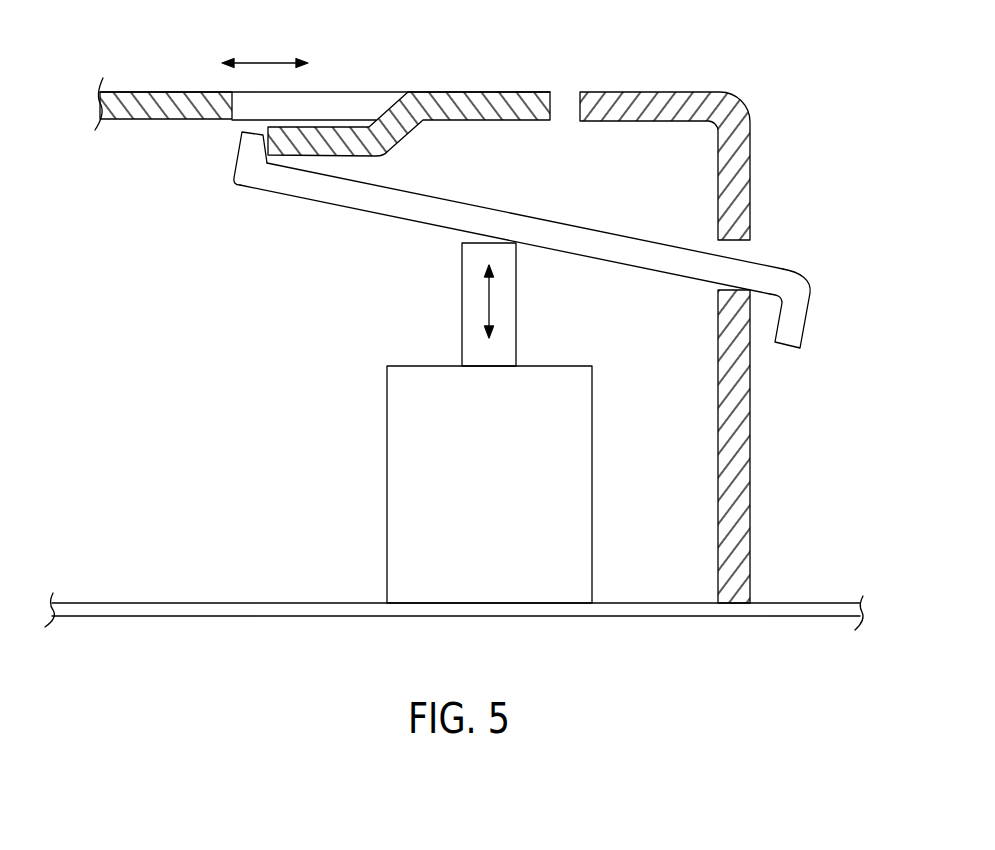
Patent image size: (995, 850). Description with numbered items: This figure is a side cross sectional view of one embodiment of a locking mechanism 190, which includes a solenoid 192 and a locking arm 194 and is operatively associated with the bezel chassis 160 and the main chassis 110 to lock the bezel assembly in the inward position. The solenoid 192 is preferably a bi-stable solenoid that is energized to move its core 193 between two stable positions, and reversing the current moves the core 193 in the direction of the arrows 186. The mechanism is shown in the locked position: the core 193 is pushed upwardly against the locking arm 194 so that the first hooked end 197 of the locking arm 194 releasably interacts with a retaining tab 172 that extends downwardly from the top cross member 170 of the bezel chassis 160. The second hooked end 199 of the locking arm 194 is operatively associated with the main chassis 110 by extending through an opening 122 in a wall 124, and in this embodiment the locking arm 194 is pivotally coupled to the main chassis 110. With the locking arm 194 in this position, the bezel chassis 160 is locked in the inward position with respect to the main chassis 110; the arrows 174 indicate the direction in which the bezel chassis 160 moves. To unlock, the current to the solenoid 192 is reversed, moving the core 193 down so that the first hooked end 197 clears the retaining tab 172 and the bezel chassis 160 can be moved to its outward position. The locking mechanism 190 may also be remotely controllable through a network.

The main chassis 110 is at (801, 600).
The opening 122 is at (740, 247).
The wall 124 is at (740, 185).
The bezel chassis 160 is at (476, 92).
The top cross member 170 is at (168, 100).
The retaining tab 172 is at (337, 147).
The arrows 174 is at (262, 60).
The arrows 186 is at (490, 302).
The locking mechanism 190 is at (306, 372).
The solenoid 192 is at (405, 483).
The core 193 is at (473, 305).
The locking arm 194 is at (357, 198).
The first hooked end 197 is at (250, 153).
The second hooked end 199 is at (797, 312).